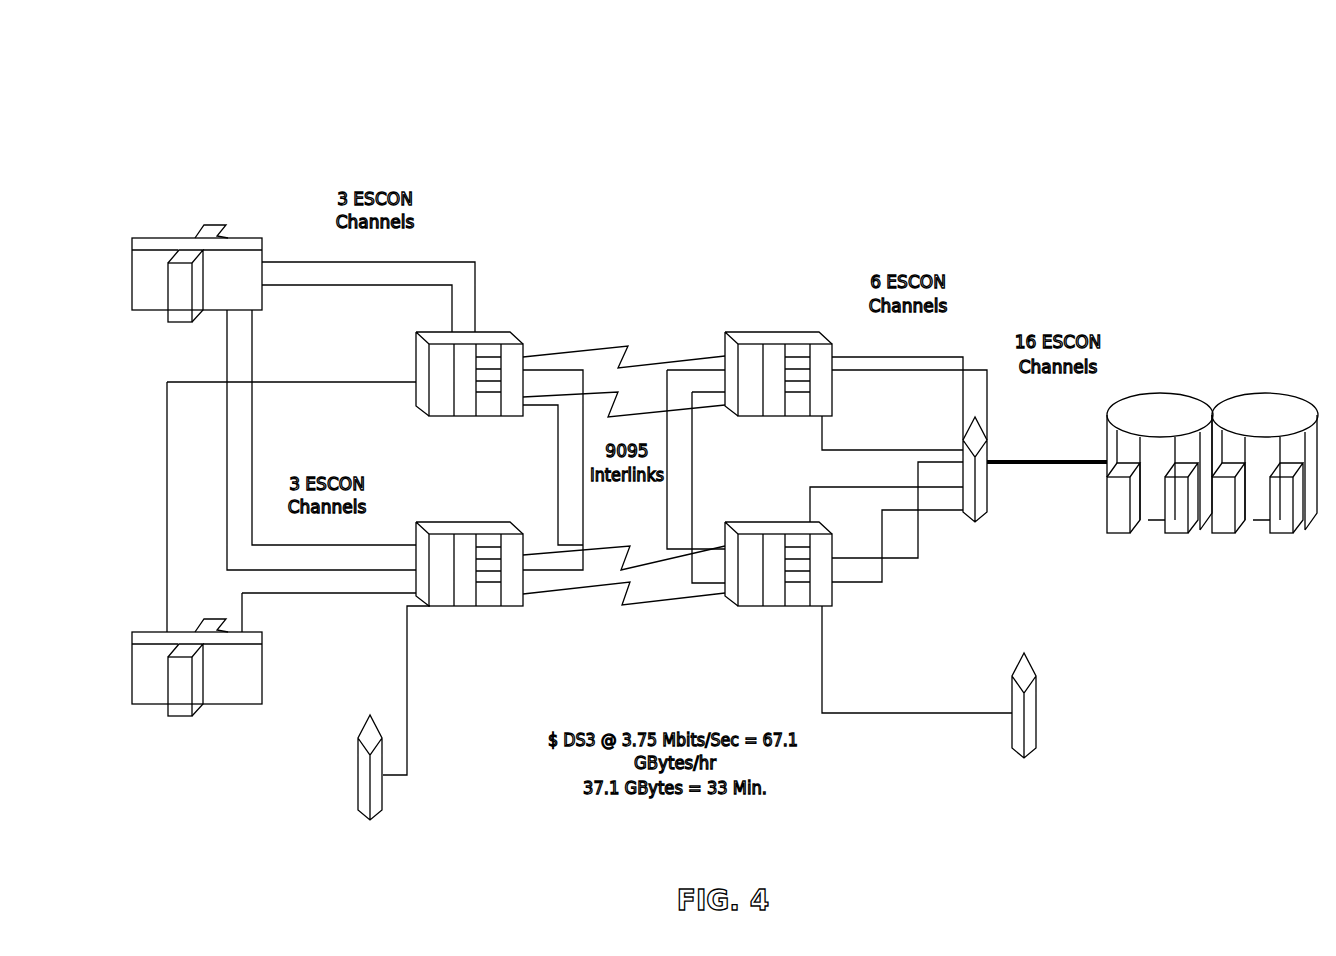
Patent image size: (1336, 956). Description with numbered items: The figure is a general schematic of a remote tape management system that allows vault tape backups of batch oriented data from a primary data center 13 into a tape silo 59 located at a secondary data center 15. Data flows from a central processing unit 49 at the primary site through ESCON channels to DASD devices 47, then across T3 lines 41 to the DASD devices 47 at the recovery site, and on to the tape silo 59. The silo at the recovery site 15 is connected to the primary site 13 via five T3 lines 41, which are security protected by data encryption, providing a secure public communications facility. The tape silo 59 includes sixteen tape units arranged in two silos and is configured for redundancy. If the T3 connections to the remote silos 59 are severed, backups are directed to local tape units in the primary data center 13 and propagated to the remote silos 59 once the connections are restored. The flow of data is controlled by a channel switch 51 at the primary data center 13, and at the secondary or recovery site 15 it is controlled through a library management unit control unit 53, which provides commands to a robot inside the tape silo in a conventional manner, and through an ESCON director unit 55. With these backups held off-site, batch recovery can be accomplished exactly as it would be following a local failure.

The primary data center 13 is at (232, 100).
The secondary data center 15 is at (1127, 152).
The T3 lines 41 is at (675, 344).
The DASD devices 47 is at (497, 332).
The central processing unit 49 is at (156, 238).
The channel switch 51 is at (358, 775).
The library management unit control unit 53 is at (1037, 702).
The ESCON director unit 55 is at (988, 495).
The tape silo 59 is at (1207, 369).